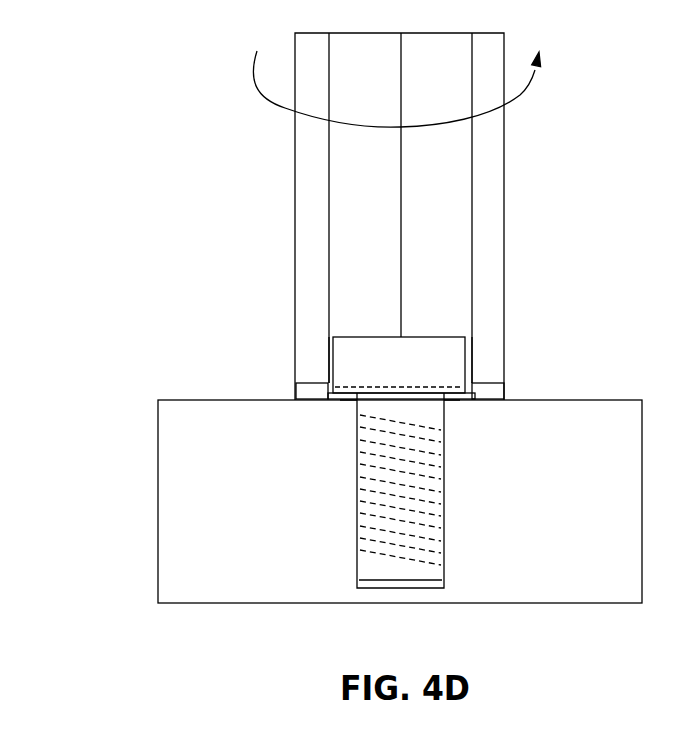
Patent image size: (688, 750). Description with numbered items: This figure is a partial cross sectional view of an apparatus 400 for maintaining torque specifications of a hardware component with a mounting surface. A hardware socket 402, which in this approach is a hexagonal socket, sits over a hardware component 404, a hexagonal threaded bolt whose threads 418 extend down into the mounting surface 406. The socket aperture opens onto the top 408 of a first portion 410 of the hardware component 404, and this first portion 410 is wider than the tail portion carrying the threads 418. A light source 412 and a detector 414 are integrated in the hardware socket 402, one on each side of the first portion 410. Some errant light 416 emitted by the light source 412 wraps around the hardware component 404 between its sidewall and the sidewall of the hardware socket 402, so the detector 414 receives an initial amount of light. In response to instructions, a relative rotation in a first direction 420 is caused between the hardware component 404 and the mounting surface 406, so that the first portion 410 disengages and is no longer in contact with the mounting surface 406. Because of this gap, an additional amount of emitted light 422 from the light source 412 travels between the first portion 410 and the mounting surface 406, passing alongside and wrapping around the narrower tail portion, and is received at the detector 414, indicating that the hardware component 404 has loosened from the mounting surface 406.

The apparatus 400 is at (98, 72).
The hardware socket 402 is at (505, 162).
The hardware component 404 is at (478, 492).
The mounting surface 406 is at (622, 400).
The top 408 is at (411, 416).
The first portion 410 is at (440, 337).
The light source 412 is at (310, 383).
The detector 414 is at (495, 383).
The errant light 416 is at (328, 362).
The threads 418 is at (378, 541).
The first direction 420 is at (262, 99).
The emitted light 422 is at (338, 418).